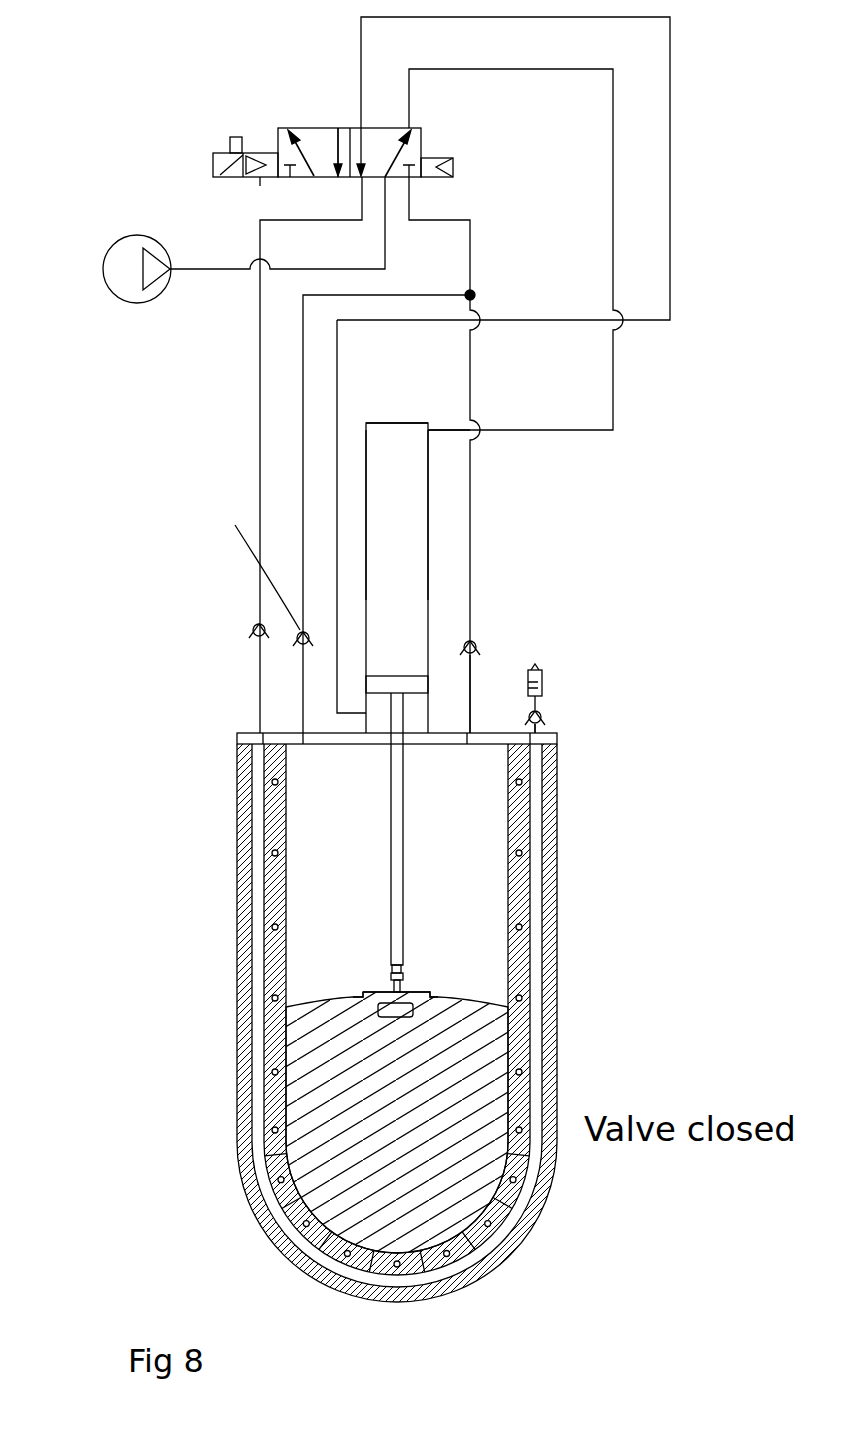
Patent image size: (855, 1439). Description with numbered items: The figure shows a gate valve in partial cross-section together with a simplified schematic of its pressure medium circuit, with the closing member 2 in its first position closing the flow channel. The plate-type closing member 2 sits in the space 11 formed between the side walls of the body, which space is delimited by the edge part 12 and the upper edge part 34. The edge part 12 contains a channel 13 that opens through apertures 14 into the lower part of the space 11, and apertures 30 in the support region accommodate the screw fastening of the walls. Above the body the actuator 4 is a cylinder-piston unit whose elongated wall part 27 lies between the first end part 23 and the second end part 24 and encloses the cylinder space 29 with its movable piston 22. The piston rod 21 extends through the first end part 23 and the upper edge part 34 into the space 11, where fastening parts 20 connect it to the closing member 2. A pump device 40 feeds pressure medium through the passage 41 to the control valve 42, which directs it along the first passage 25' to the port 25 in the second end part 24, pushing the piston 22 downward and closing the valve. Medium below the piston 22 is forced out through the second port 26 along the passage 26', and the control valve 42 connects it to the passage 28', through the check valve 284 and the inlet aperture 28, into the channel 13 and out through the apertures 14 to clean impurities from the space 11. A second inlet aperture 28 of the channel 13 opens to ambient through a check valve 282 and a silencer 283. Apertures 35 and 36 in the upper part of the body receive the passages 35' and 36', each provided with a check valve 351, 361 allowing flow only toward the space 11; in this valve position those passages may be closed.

The closing member 2 is at (480, 1130).
The actuator 4 is at (428, 519).
The space 11 is at (305, 912).
The edge part 12 is at (552, 1188).
The channel 13 is at (480, 1287).
The apertures 14 is at (490, 1228).
The fastening parts 20 is at (402, 988).
The piston rod 21 is at (398, 928).
The piston 22 is at (420, 730).
The first end part 23 is at (425, 687).
The second end part 24 is at (366, 423).
The port 25 is at (482, 398).
The first passage 25' is at (563, 249).
The second port 26 is at (281, 521).
The passage 26' is at (530, 168).
The wall part 27 is at (443, 600).
The inlet aperture 28 is at (424, 710).
The passage 28' is at (279, 455).
The cylinder space 29 is at (413, 568).
The apertures 30 is at (270, 1093).
The upper edge part 34 is at (533, 757).
The aperture 35 is at (331, 515).
The second passage 35' is at (252, 569).
The aperture 36 is at (494, 694).
The passage 36' is at (486, 455).
The pump device 40 is at (112, 293).
The passage 41 is at (217, 269).
The control valve 42 is at (272, 140).
The check valve 282 is at (537, 710).
The silencer 283 is at (543, 670).
The check valve 284 is at (258, 623).
The check valve 351 is at (300, 644).
The check valve 361 is at (457, 650).